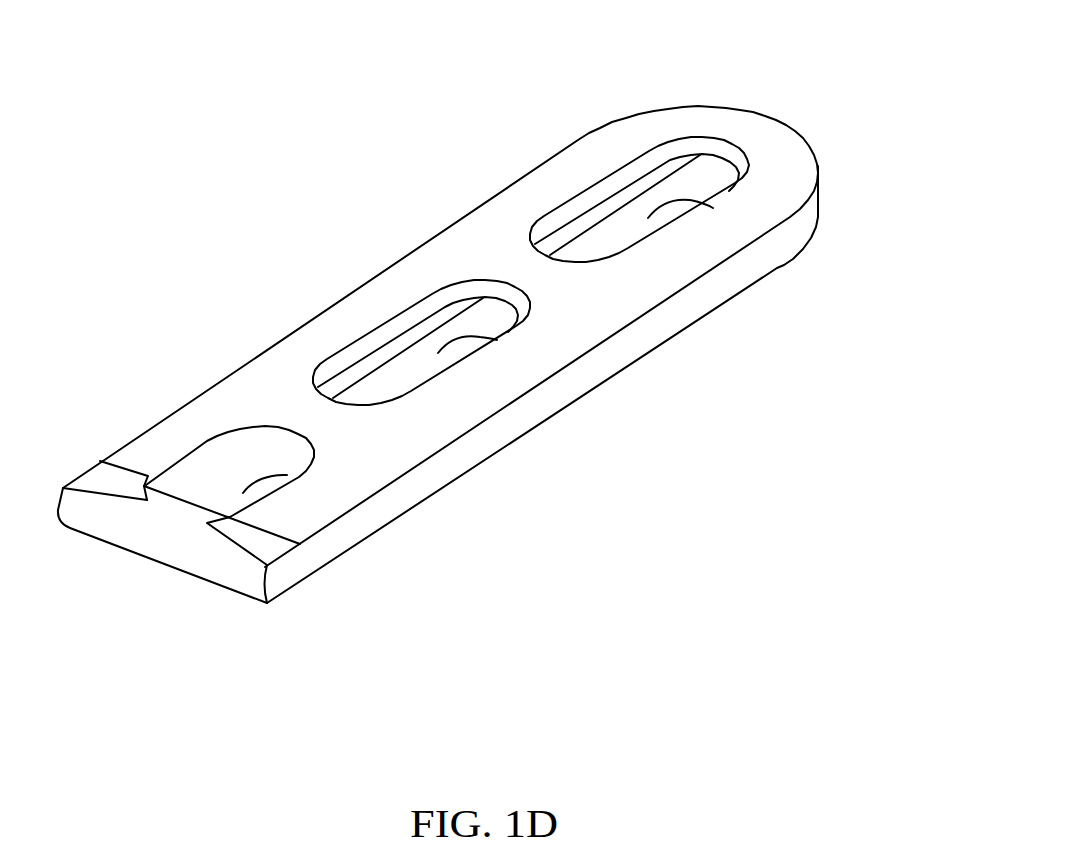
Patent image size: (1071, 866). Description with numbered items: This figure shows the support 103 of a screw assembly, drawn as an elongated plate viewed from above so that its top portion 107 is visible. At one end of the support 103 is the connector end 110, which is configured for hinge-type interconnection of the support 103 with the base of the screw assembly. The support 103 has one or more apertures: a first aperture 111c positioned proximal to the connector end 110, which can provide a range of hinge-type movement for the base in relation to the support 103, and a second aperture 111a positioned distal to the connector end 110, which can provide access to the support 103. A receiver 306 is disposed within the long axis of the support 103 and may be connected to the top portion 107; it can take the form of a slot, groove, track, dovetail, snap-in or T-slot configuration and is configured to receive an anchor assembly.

The support 103 is at (698, 101).
The top portion 107 is at (269, 377).
The connector end 110 is at (186, 522).
The second aperture 111a is at (497, 340).
The first aperture 111c is at (287, 475).
The receiver 306 is at (386, 345).